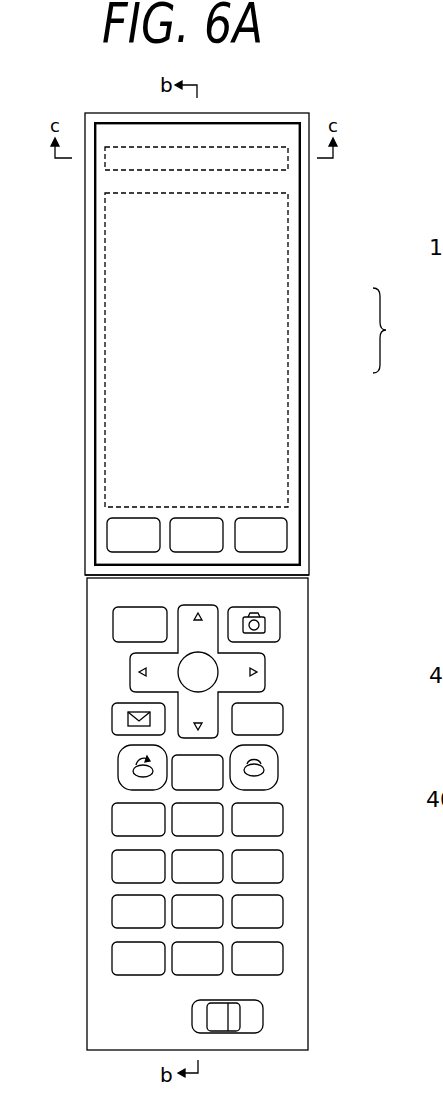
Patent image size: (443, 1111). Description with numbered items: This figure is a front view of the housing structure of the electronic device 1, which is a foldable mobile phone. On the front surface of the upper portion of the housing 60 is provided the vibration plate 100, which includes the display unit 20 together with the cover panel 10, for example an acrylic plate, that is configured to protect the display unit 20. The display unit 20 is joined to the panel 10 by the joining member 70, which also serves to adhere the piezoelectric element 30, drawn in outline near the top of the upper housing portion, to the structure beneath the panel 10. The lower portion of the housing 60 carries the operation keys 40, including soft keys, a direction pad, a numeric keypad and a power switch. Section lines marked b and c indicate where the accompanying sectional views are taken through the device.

The electronic device 1 is at (152, 104).
The cover panel 10 is at (300, 307).
The display unit 20 is at (288, 358).
The piezoelectric element 30 is at (285, 170).
The operation keys 40 is at (268, 535).
The housing 60 is at (88, 255).
The joining member 70 is at (59, 1102).
The vibration plate 100 is at (403, 330).